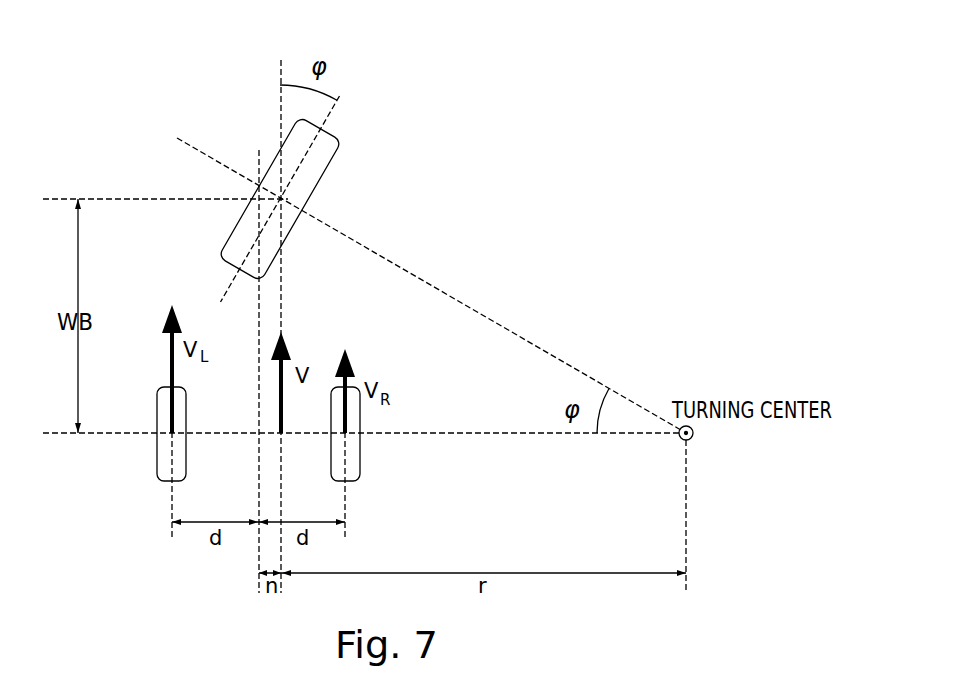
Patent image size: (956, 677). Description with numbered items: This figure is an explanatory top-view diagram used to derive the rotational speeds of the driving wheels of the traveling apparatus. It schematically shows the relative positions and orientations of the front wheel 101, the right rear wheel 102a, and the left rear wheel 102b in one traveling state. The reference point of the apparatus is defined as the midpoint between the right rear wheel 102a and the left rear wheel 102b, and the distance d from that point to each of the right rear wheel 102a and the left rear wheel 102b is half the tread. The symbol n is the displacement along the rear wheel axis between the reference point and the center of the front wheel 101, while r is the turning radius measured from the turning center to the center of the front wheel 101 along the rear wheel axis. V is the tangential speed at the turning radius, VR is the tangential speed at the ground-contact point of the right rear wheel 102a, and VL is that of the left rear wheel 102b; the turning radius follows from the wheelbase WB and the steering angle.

The front wheel 101 is at (335, 158).
The right rear wheel 102a is at (360, 481).
The left rear wheel 102b is at (157, 481).